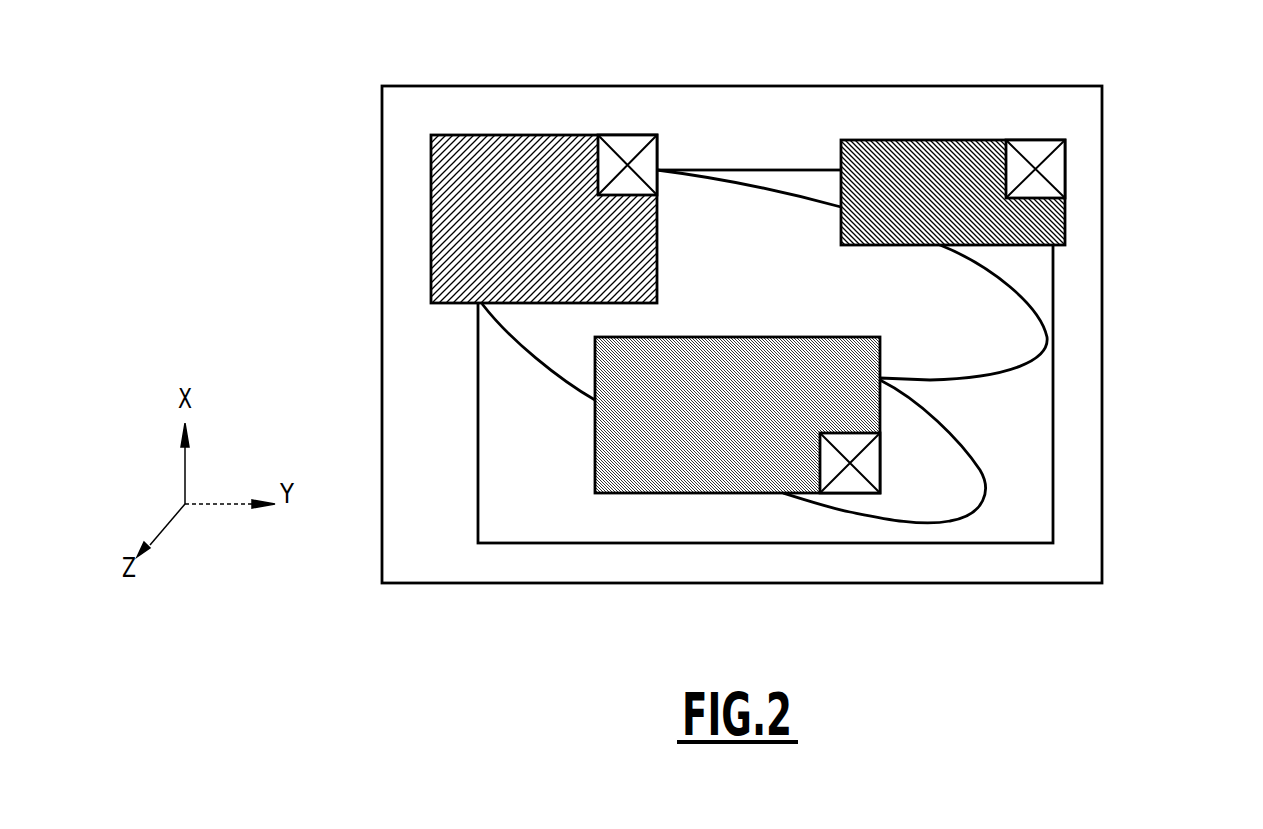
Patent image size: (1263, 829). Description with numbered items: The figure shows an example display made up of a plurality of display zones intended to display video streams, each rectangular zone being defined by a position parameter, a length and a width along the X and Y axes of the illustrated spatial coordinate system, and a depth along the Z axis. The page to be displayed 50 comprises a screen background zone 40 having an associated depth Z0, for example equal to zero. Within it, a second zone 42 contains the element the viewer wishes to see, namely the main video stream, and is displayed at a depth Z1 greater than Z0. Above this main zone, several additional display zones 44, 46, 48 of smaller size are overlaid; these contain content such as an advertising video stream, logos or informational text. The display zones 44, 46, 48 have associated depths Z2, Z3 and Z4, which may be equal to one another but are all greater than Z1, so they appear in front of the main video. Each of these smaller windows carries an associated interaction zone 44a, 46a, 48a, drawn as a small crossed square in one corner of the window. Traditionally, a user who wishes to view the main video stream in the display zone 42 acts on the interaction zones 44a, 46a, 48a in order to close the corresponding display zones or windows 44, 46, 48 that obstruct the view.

The page to be displayed 50 is at (1138, 147).
The screen background zone 40 is at (1058, 562).
The second zone 42 is at (1020, 400).
The additional display zone 44 is at (673, 453).
The interaction zone 44a is at (850, 483).
The additional display zone 46 is at (922, 182).
The interaction zone 46a is at (1032, 150).
The additional display zone 48 is at (500, 172).
The interaction zone 48a is at (625, 150).